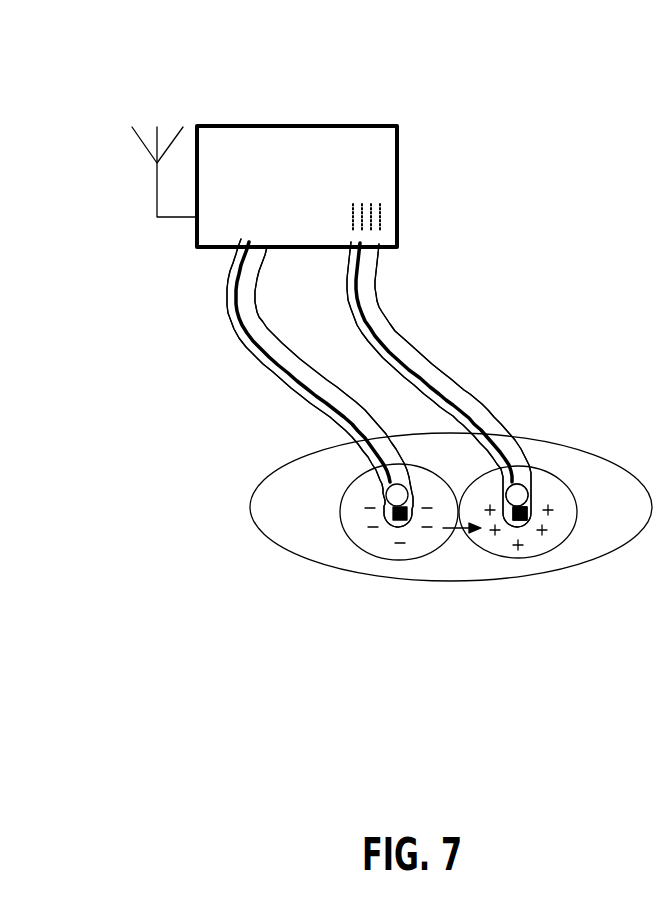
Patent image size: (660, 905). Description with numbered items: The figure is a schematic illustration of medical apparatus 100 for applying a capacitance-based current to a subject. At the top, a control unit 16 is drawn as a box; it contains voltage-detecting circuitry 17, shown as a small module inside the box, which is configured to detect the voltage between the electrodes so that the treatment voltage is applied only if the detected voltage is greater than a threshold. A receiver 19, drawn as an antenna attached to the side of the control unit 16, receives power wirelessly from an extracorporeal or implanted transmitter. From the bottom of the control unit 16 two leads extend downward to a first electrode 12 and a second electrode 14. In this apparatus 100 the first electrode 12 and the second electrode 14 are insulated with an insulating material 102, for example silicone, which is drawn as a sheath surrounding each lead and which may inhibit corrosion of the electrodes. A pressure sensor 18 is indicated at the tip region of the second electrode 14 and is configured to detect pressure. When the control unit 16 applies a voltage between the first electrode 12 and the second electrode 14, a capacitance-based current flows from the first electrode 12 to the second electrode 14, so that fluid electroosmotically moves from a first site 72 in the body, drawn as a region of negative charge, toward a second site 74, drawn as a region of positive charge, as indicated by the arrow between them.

The medical apparatus 100 is at (68, 281).
The first electrode 12 is at (291, 377).
The second electrode 14 is at (392, 351).
The control unit 16 is at (358, 126).
The voltage-detecting circuitry 17 is at (380, 207).
The pressure sensor 18 is at (531, 462).
The receiver 19 is at (157, 193).
The first site 72 is at (413, 560).
The positively charged region 74 is at (523, 560).
The insulating material 102 is at (229, 322).